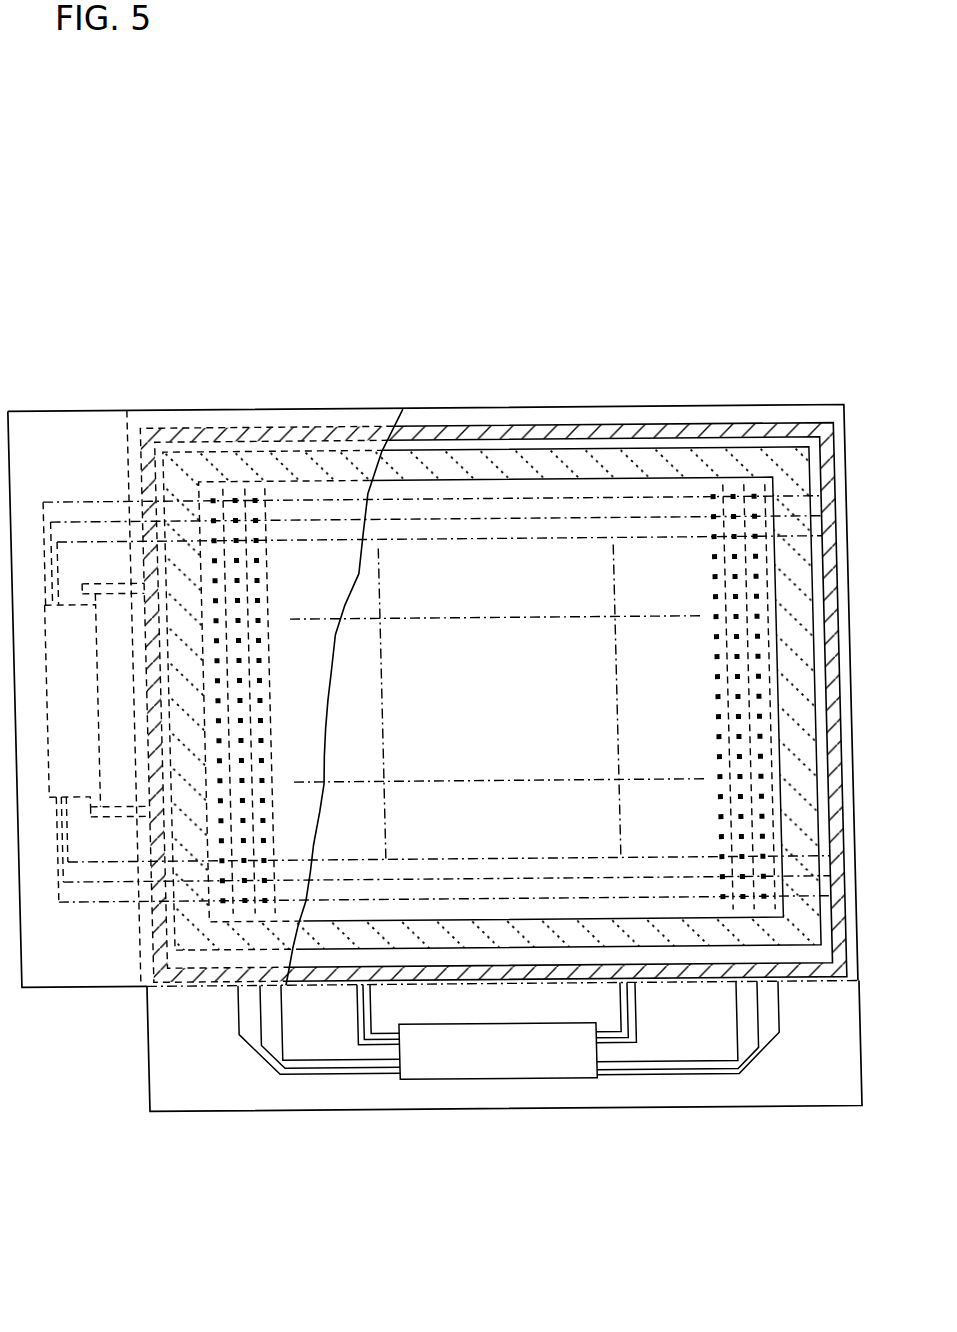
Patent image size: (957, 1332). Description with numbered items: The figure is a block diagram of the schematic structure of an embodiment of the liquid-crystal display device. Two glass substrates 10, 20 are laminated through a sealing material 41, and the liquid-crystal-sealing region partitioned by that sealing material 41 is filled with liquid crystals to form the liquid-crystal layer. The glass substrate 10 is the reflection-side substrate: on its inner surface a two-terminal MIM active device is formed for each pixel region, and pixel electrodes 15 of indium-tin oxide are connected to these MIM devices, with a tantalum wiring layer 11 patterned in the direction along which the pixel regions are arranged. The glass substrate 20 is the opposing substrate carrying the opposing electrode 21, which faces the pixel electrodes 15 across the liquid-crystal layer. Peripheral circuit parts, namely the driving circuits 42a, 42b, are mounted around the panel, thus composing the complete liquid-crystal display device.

The glass substrate 10 is at (180, 1083).
The glass substrate 20 is at (70, 962).
The sealing material 41 is at (644, 427).
The driving circuit 42a is at (57, 633).
The driving circuit 42b is at (520, 1066).
The pixel electrodes 15 is at (264, 597).
The wiring layer 11 is at (261, 744).
The opposing electrode 21 is at (449, 503).